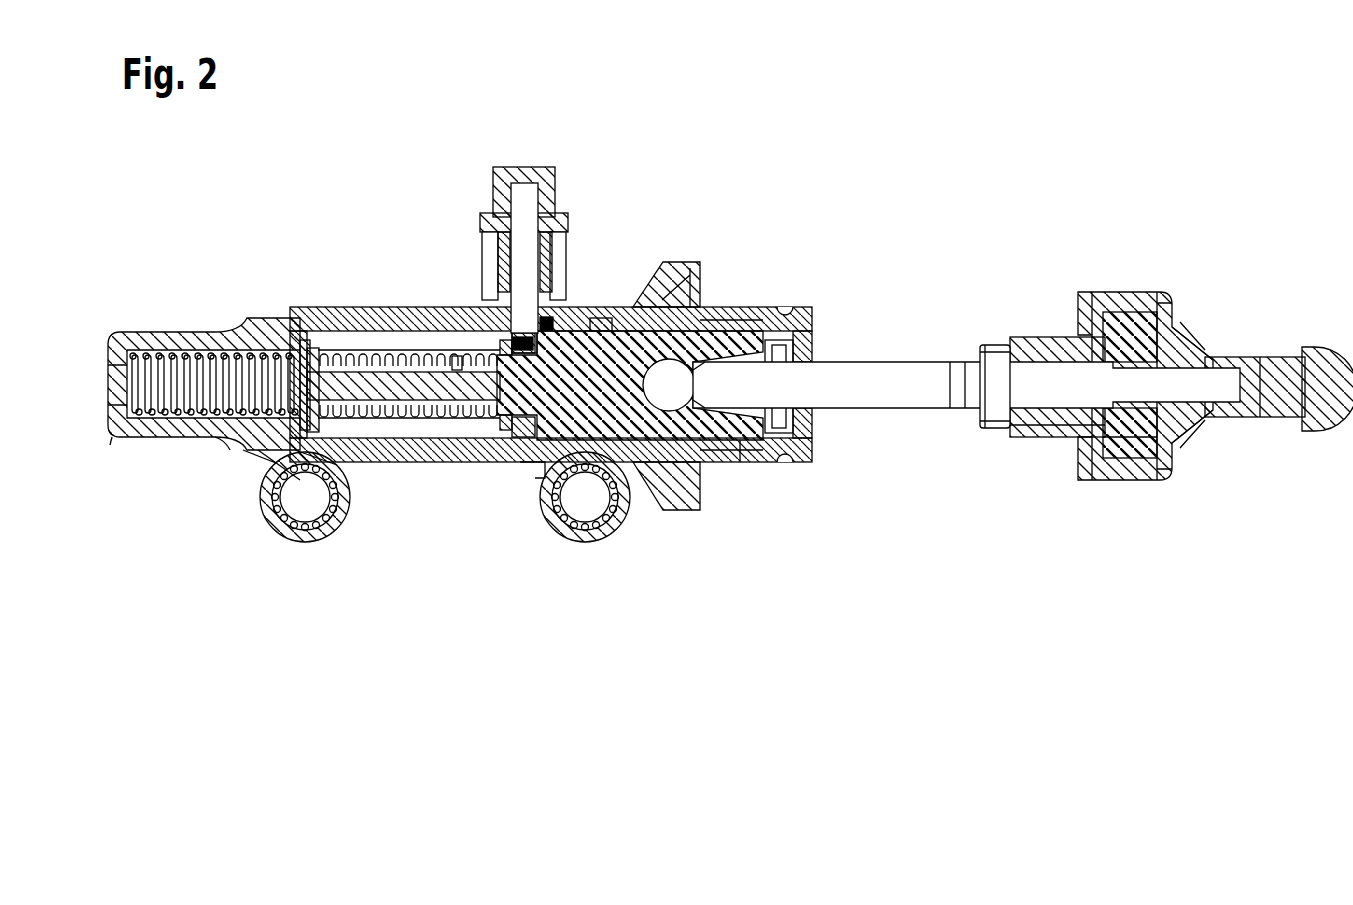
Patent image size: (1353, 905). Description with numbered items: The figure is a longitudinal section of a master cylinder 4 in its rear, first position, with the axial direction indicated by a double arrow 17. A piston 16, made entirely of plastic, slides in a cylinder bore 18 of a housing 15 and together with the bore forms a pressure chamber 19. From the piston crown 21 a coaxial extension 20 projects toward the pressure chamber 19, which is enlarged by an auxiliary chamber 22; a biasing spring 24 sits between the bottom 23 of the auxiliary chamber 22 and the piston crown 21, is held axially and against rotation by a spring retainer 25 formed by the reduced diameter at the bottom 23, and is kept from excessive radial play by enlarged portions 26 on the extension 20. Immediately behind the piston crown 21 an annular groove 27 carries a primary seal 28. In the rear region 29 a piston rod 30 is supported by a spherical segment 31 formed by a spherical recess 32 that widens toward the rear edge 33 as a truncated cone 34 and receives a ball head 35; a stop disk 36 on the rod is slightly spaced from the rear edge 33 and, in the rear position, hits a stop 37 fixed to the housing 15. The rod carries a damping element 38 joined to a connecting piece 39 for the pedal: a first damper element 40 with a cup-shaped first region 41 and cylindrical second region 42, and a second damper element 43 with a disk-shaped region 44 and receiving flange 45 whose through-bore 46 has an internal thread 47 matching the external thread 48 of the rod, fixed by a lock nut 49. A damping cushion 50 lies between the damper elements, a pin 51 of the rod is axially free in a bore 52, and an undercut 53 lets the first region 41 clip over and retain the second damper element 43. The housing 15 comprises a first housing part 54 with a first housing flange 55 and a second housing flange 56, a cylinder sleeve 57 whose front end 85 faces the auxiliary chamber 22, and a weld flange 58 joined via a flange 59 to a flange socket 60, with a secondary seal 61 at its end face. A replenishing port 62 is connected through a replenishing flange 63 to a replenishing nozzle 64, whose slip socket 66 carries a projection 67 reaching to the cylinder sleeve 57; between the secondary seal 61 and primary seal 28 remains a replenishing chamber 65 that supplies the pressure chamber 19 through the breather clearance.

The master cylinder 4 is at (395, 566).
The housing 15 is at (334, 294).
The piston 16 is at (645, 478).
The double arrow 17 is at (920, 168).
The cylinder bore 18 is at (398, 440).
The pressure chamber 19 is at (405, 347).
The extension 20 is at (368, 455).
The piston crown 21 is at (487, 455).
The auxiliary chamber 22 is at (150, 440).
The bottom 23 is at (115, 440).
The biasing spring 24 is at (165, 372).
The spring retainer 25 is at (130, 362).
The enlarged portions 26 is at (457, 355).
The annular groove 27 is at (450, 455).
The primary seal 28 is at (527, 458).
The rear region 29 is at (752, 450).
The piston rod 30 is at (905, 400).
The spherical segment 31 is at (674, 272).
The spherical recess 32 is at (670, 400).
The rear edge 33 is at (790, 445).
The truncated cone 34 is at (758, 345).
The ball head 35 is at (720, 445).
The stop disk 36 is at (815, 345).
The stop 37 is at (835, 440).
The damping element 38 is at (1152, 359).
The connecting piece 39 is at (1318, 375).
The first damper element 40 is at (1180, 442).
The first region 41 is at (1110, 478).
The second region 42 is at (1228, 365).
The second damper element 43 is at (1073, 333).
The disk-shaped region 44 is at (1098, 292).
The receiving flange 45 is at (1023, 340).
The through-bore 46 is at (1030, 432).
The internal thread 47 is at (1000, 430).
The external thread 48 is at (960, 357).
The lock nut 49 is at (985, 343).
The damping cushion 50 is at (1140, 442).
The pin 51 is at (1195, 410).
The bore 52 is at (1262, 390).
The undercut 53 is at (1052, 408).
The first housing part 54 is at (250, 440).
The first housing flange 55 is at (295, 535).
The second housing flange 56 is at (593, 535).
The cylinder sleeve 57 is at (300, 365).
The weld flange 58 is at (640, 306).
The flange 59 is at (713, 312).
The flange socket 60 is at (606, 330).
The secondary seal 61 is at (562, 330).
The replenishing port 62 is at (522, 320).
The replenishing flange 63 is at (553, 262).
The replenishing nozzle 64 is at (580, 199).
The replenishing chamber 65 is at (532, 475).
The slip socket 66 is at (495, 213).
The projection 67 is at (553, 300).
The front end 85 is at (215, 432).